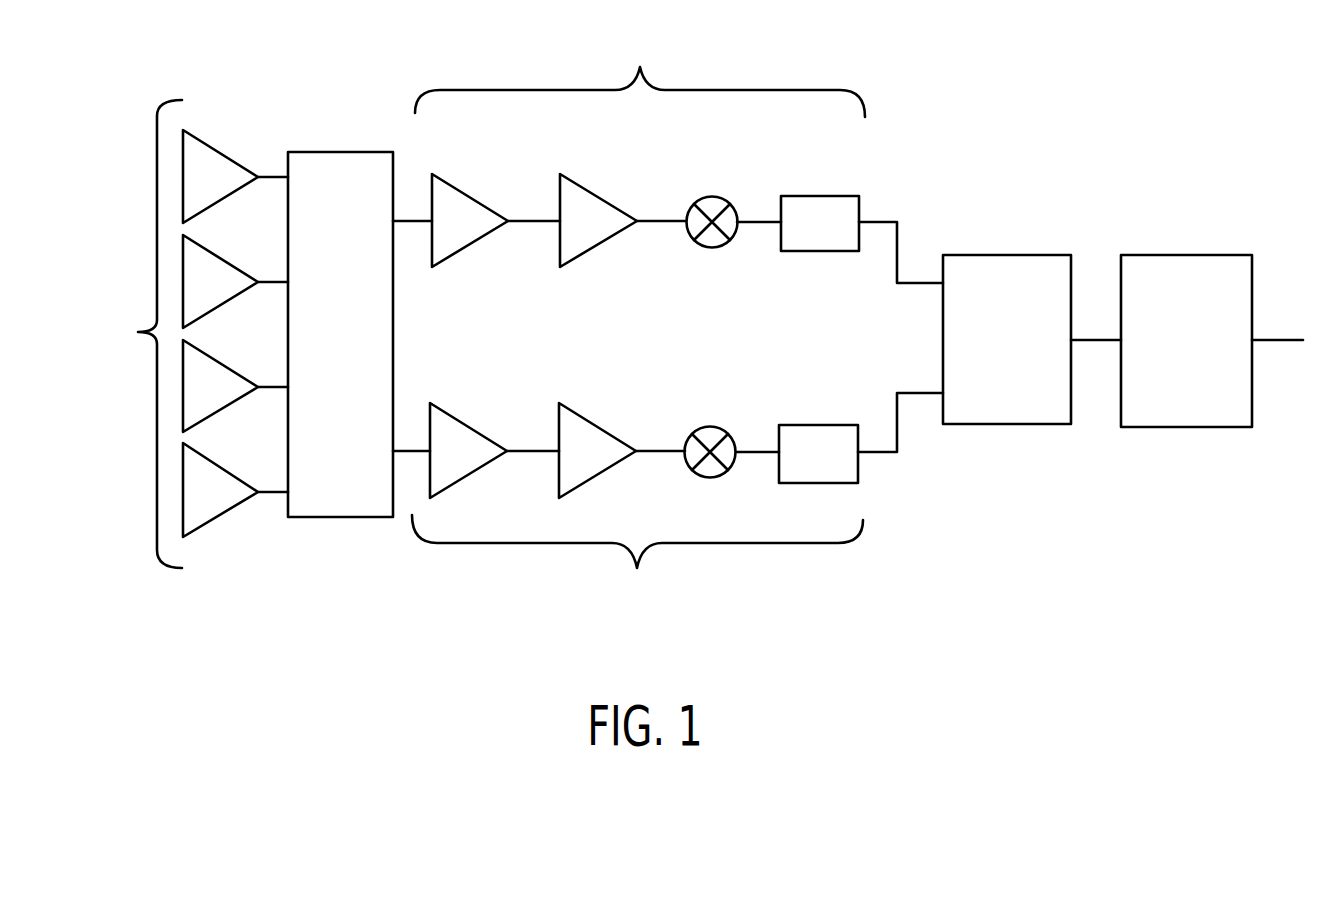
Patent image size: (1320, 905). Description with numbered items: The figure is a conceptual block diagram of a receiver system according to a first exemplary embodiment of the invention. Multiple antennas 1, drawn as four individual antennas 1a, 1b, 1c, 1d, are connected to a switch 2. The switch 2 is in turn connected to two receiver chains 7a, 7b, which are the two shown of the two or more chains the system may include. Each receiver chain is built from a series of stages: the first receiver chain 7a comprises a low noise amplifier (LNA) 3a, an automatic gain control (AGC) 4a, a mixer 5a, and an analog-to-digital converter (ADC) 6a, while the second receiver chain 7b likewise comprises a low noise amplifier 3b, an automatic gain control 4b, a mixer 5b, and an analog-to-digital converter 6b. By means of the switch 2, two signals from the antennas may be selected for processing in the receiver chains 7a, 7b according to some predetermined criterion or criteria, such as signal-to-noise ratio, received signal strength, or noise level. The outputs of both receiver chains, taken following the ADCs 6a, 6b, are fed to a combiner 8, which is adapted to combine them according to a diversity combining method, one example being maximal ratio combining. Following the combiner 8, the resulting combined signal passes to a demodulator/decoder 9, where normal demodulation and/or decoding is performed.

The multiple antennas 1 is at (149, 334).
The antenna 1a is at (233, 155).
The antenna 1b is at (233, 261).
The antenna 1c is at (233, 366).
The antenna 1d is at (233, 471).
The switch 2 is at (338, 152).
The low noise amplifier (LNA) 3a is at (472, 196).
The low noise amplifier (LNA) 3b is at (470, 426).
The automatic gain control (AGC) 4a is at (600, 196).
The automatic gain control (AGC) 4b is at (598, 426).
The mixer 5a is at (711, 197).
The mixer 5b is at (711, 427).
The analog-to-digital converter (ADC) 6a is at (815, 196).
The analog-to-digital converter (ADC) 6b is at (813, 425).
The receiver chain 7a is at (640, 73).
The receiver chain 7b is at (637, 561).
The combiner 8 is at (995, 255).
The demodulator/decoder 9 is at (1178, 255).